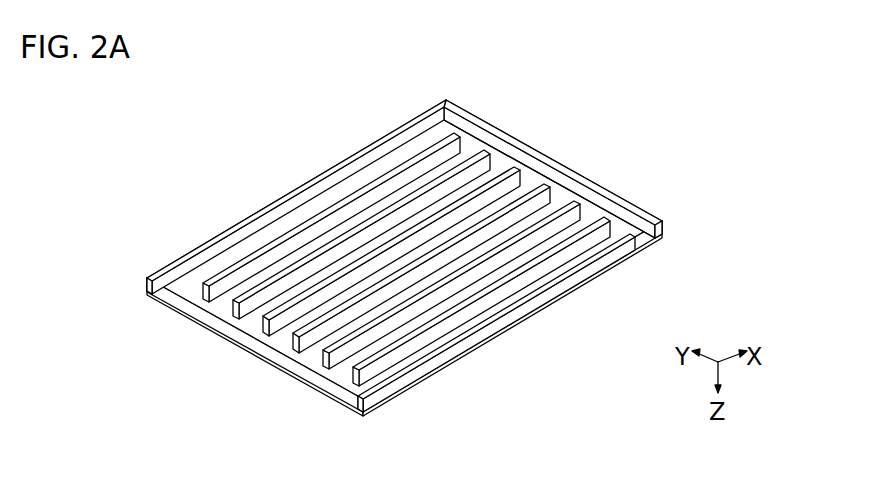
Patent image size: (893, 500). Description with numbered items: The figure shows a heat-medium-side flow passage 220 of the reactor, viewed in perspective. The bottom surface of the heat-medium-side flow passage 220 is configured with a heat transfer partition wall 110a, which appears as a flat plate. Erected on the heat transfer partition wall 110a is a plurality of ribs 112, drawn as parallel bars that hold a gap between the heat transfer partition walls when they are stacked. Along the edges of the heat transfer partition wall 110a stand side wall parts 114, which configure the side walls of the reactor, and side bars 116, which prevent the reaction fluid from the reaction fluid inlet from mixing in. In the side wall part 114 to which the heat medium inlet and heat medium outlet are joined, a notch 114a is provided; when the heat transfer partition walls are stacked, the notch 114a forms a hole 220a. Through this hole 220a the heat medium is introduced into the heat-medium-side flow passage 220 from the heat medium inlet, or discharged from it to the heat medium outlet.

The heat-medium-side flow passage 220 is at (477, 266).
The heat transfer partition wall 110a is at (468, 150).
The ribs 112 is at (607, 221).
The side wall parts 114 is at (400, 133).
The notch 114a is at (653, 245).
The hole 220a is at (658, 229).
The side bars 116 is at (652, 222).